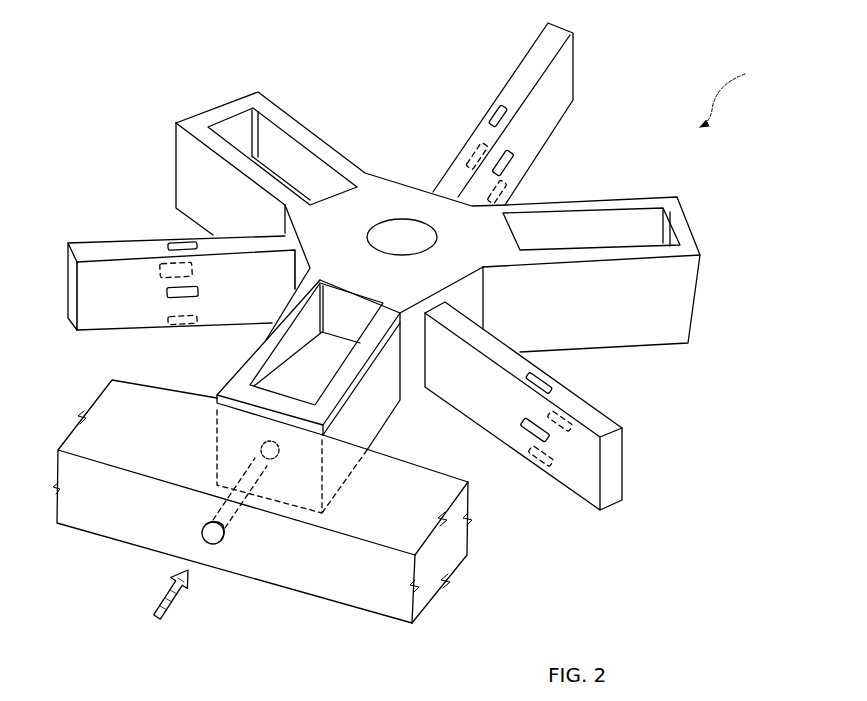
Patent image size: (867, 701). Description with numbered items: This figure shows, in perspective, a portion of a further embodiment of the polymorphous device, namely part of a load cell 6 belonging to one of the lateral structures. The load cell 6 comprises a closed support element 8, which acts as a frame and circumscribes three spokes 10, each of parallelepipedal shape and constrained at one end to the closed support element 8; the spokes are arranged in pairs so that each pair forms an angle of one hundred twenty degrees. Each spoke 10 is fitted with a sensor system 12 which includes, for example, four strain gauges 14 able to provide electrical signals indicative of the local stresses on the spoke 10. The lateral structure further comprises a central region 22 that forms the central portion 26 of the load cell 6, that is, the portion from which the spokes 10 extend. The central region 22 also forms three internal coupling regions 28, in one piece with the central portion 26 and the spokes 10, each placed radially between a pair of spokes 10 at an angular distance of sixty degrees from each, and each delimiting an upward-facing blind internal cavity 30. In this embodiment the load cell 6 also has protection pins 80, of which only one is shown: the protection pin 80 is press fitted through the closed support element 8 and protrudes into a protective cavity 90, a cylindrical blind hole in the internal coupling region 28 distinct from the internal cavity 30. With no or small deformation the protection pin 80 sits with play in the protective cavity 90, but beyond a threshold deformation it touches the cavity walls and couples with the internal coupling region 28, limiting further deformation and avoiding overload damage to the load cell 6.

The load cell 6 is at (729, 90).
The closed support element 8 is at (107, 402).
The spoke 10 is at (538, 58).
The sensor system 12 is at (462, 102).
The strain gauge 14 is at (488, 110).
The central region 22 is at (390, 205).
The central portion 26 is at (417, 358).
The internal coupling region 28 is at (202, 120).
The internal cavity 30 is at (273, 140).
The protection pin 80 is at (233, 515).
The protective cavity 90 is at (258, 457).